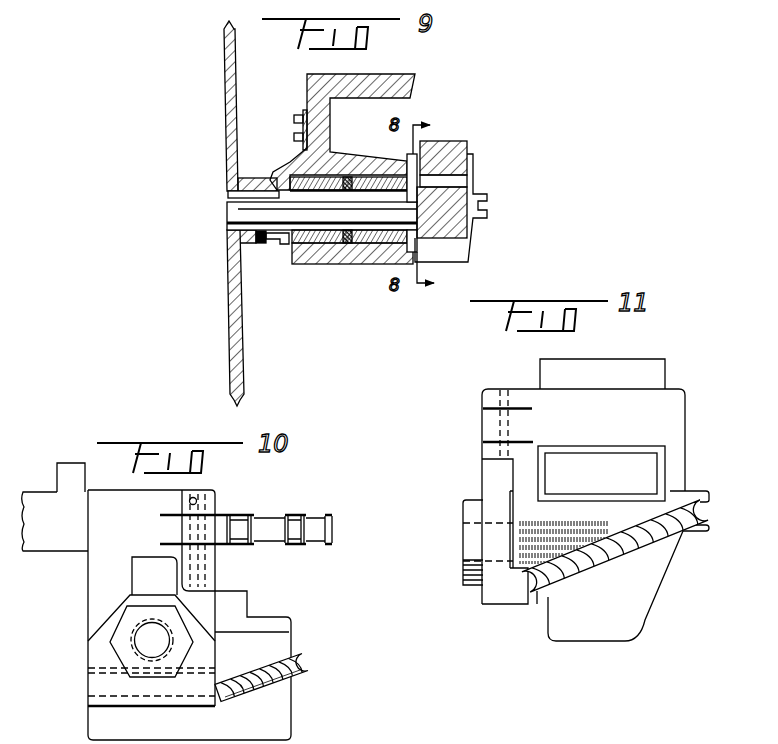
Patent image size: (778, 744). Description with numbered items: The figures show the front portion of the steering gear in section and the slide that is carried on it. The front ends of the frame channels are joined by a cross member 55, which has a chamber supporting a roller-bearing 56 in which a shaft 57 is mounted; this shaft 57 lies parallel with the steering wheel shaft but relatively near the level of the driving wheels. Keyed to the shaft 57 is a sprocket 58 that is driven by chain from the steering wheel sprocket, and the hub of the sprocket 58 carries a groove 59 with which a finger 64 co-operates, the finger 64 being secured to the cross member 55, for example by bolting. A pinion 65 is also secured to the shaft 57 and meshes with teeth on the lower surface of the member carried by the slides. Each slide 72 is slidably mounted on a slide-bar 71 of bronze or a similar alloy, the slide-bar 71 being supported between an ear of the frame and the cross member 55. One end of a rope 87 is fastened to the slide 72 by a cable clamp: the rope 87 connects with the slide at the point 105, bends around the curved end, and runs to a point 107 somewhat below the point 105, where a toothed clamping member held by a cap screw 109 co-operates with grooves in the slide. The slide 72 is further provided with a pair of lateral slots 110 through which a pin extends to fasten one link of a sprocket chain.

In FIG. 9, the cross member 55 is at (348, 262).
In FIG. 9, the roller-bearing 56 is at (320, 240).
In FIG. 9, the shaft 57 is at (246, 208).
In FIG. 9, the sprocket 58 is at (229, 258).
In FIG. 9, the groove 59 is at (276, 243).
In FIG. 9, the finger 64 is at (304, 158).
In FIG. 9, the pinion 65 is at (450, 192).
In FIG. 11, the slide-bar 71 is at (642, 473).
In FIG. 9, the slide 72 is at (467, 259).
In FIG. 10, the slide 72 is at (88, 721).
In FIG. 11, the slide 72 is at (673, 405).
In FIG. 10, the rope 87 is at (309, 655).
In FIG. 11, the rope 87 is at (709, 511).
In FIG. 10, the point 105 is at (296, 676).
In FIG. 10, the point 107 is at (218, 696).
In FIG. 10, the cap screw 109 is at (120, 650).
In FIG. 10, the lateral slots 110 is at (213, 508).
In FIG. 11, the lateral slots 110 is at (487, 412).